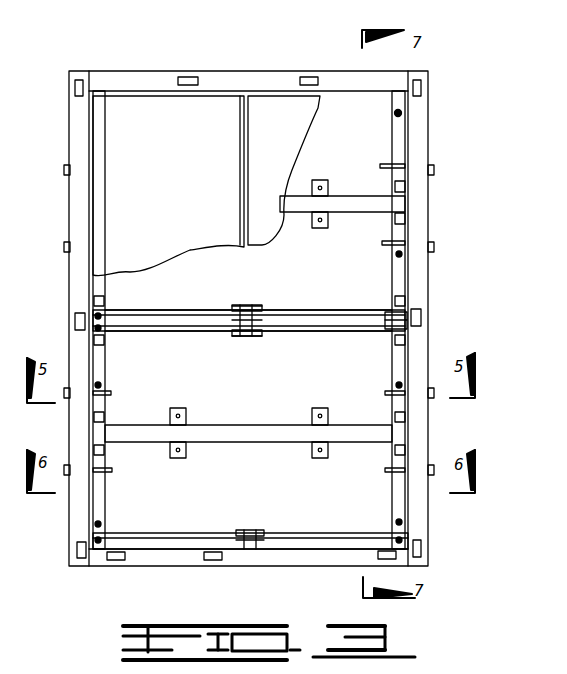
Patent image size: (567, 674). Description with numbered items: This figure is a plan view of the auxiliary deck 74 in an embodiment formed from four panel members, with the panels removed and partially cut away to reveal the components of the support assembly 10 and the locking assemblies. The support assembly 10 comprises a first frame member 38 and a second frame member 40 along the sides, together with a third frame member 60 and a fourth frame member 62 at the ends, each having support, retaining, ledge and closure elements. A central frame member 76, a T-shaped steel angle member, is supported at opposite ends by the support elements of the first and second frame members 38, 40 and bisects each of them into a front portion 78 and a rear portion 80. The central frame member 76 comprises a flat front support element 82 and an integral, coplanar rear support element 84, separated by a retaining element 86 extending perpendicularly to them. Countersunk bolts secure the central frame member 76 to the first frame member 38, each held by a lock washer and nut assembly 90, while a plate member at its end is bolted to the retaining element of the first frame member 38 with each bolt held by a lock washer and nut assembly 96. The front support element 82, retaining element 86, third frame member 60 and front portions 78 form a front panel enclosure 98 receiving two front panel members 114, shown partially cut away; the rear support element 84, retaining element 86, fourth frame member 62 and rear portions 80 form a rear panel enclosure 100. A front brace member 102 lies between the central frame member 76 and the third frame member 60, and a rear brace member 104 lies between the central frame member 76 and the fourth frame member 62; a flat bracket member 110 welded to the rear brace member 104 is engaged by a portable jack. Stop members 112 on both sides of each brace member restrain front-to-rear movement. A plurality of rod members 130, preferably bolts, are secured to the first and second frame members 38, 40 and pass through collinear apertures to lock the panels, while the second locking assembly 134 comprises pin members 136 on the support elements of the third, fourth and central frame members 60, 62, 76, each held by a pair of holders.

The support assembly 10 is at (432, 79).
The first frame member 38 is at (433, 276).
The second frame member 40 is at (66, 283).
The third frame member 60 is at (232, 69).
The fourth frame member 62 is at (170, 572).
The auxiliary deck 74 is at (146, 115).
The central frame member 76 is at (302, 303).
The front portion 78 is at (118, 290).
The rear portion 80 is at (100, 350).
The front support element 82 is at (195, 309).
The rear support element 84 is at (197, 335).
The retaining element 86 is at (240, 305).
The lock washer and nut assembly 90 is at (386, 316).
The lock washer and nut assembly 96 is at (422, 312).
The front panel enclosure 98 is at (396, 130).
The rear panel enclosure 100 is at (395, 345).
The front brace member 102 is at (340, 196).
The rear brace member 104 is at (231, 437).
The bracket member 110 is at (180, 408).
The stop member 112 is at (406, 187).
The front panel member 114 is at (178, 168).
The rod member 130 is at (386, 164).
The second locking assembly 134 is at (270, 336).
The pin member 136 is at (258, 305).